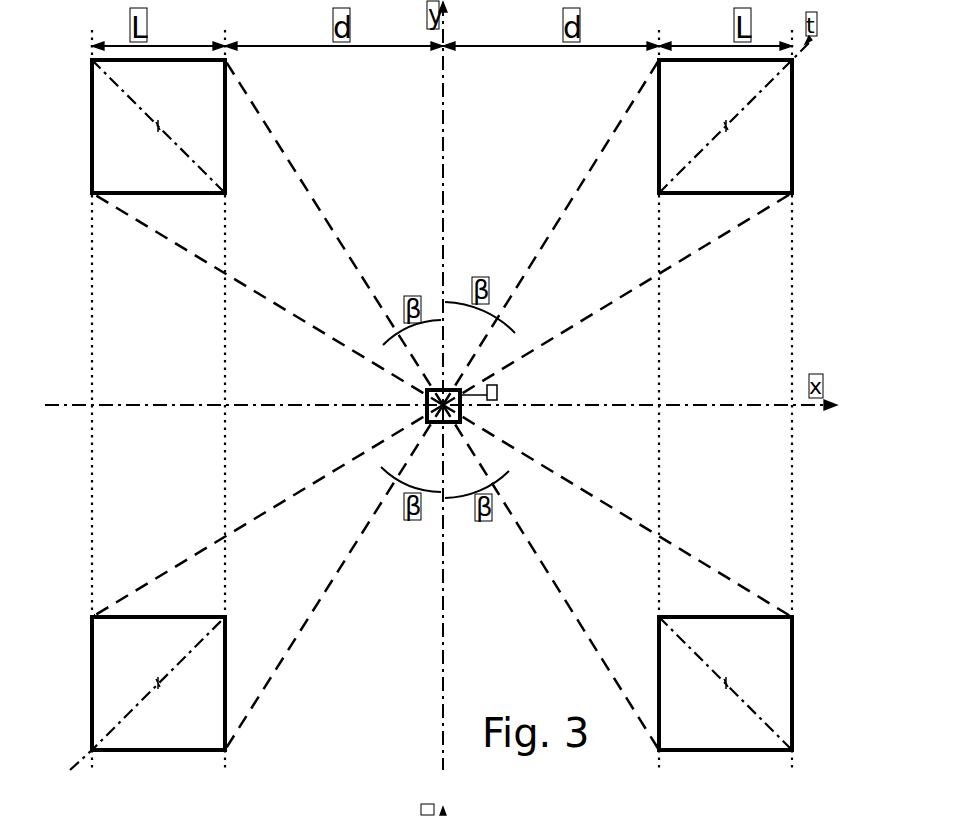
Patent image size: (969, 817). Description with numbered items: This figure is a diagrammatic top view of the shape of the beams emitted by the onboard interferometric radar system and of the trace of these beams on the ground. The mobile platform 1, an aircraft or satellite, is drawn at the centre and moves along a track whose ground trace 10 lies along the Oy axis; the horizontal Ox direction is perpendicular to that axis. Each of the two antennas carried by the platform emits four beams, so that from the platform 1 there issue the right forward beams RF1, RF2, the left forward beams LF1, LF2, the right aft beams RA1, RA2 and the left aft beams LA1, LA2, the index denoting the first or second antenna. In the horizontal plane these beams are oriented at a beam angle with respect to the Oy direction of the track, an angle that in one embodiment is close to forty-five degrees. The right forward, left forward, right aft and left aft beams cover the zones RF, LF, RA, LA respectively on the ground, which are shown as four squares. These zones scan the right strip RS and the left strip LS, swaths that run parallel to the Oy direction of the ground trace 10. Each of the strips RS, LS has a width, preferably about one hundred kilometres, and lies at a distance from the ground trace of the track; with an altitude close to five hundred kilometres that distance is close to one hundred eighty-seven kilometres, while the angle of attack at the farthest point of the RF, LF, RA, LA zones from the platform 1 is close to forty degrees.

The platform 1 is at (448, 390).
The ground trace 10 is at (364, 708).
The left forward zone LF is at (93, 170).
The right forward zone RF is at (792, 180).
The left aft zone LA is at (92, 636).
The right aft zone RA is at (792, 634).
The left strip LS is at (112, 336).
The right strip RS is at (780, 515).
The left forward beam LF1 is at (312, 312).
The left forward beam LF2 is at (267, 299).
The right forward beam RF1 is at (560, 228).
The right forward beam RF2 is at (617, 299).
The left aft beam LA1 is at (307, 590).
The left aft beam LA2 is at (267, 511).
The right aft beam RA1 is at (590, 505).
The right aft beam RA2 is at (617, 511).